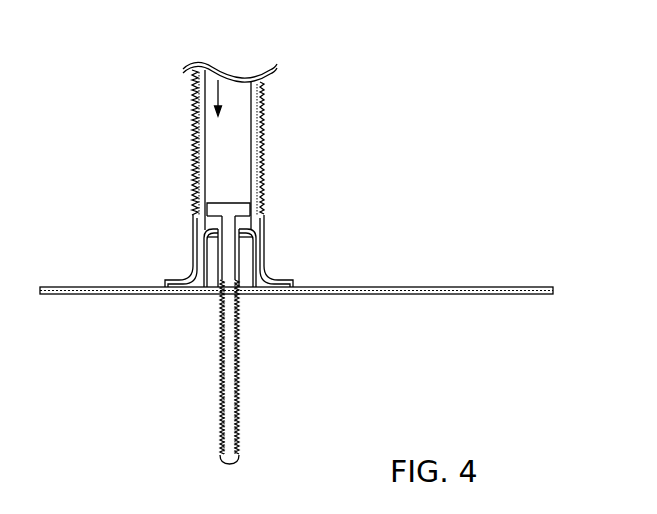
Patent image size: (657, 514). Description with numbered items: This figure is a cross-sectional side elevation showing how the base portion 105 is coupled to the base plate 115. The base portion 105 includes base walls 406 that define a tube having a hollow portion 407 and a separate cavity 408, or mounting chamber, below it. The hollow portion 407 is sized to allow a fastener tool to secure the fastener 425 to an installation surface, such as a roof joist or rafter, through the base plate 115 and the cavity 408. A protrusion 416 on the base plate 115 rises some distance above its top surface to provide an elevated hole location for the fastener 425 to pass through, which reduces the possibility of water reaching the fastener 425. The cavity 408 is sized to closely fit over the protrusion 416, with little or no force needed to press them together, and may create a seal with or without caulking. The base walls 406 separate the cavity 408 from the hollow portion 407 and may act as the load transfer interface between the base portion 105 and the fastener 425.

The base portion 105 is at (466, 40).
The base plate 115 is at (432, 279).
The base walls 406 is at (256, 167).
The hollow portion 407 is at (218, 80).
The cavity 408 is at (246, 251).
The protrusion 416 is at (204, 274).
The fastener 425 is at (242, 380).